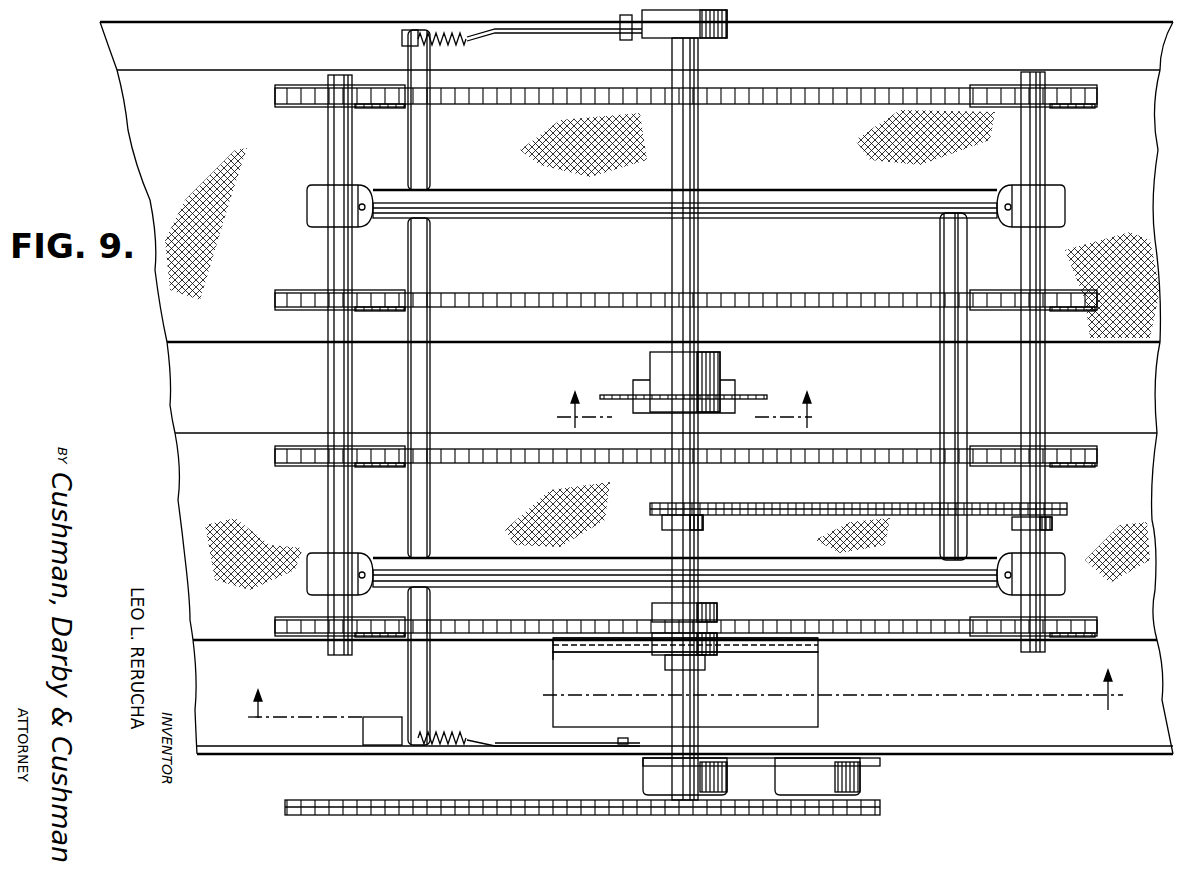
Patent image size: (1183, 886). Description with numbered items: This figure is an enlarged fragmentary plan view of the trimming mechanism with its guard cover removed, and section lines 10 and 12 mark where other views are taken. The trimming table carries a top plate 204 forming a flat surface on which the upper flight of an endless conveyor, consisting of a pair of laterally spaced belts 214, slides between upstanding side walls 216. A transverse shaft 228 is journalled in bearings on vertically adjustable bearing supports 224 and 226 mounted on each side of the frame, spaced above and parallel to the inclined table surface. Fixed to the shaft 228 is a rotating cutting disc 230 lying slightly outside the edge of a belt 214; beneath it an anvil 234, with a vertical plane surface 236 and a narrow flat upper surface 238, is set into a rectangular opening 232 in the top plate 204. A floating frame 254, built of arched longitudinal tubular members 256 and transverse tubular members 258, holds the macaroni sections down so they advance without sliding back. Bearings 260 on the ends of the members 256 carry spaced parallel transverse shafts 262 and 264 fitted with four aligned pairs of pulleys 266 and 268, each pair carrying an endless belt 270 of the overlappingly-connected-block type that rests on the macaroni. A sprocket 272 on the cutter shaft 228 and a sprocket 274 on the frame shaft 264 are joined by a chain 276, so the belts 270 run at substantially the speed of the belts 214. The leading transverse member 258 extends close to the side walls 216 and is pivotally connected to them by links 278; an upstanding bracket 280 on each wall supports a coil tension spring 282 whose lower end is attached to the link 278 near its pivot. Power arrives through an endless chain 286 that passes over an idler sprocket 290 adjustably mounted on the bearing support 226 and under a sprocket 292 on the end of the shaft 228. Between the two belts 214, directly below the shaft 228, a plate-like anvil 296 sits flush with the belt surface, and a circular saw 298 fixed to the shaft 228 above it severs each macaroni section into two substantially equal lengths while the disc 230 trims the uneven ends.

The section line 10- 10 is at (685, 708).
The section line 12- 12 is at (690, 410).
The top plate 204 is at (167, 371).
The belts 214 is at (228, 343).
The side walls 216 is at (218, 28).
The bearing support 224 is at (652, 38).
The bearing support 226 is at (768, 766).
The transverse shaft 228 is at (698, 266).
The cutting disc 230 is at (605, 652).
The rectangular opening 232 is at (818, 680).
The anvil 234 is at (548, 645).
The plane surface 236 is at (556, 655).
The upper surface 238 is at (818, 645).
The floating frame 254 is at (432, 166).
The longitudinal tubular members 256 is at (490, 290).
The transverse tubular members 258 is at (430, 384).
The bearings 260 is at (307, 208).
The transverse shaft 262 is at (328, 406).
The frame shaft 264 is at (1045, 386).
The pulleys 266 is at (308, 110).
The pulleys 268 is at (1068, 108).
The endless belts 270 is at (765, 108).
The sprocket 272 is at (660, 502).
The sprocket 274 is at (1052, 515).
The chain 276 is at (898, 502).
The links 278 is at (540, 34).
The bracket 280 is at (402, 40).
The coil tension spring 282 is at (448, 40).
The endless chain 286 is at (458, 800).
The idler sprocket 290 is at (860, 790).
The sprocket 292 is at (640, 800).
The anvil 296 is at (735, 382).
The circular saw 298 is at (608, 394).